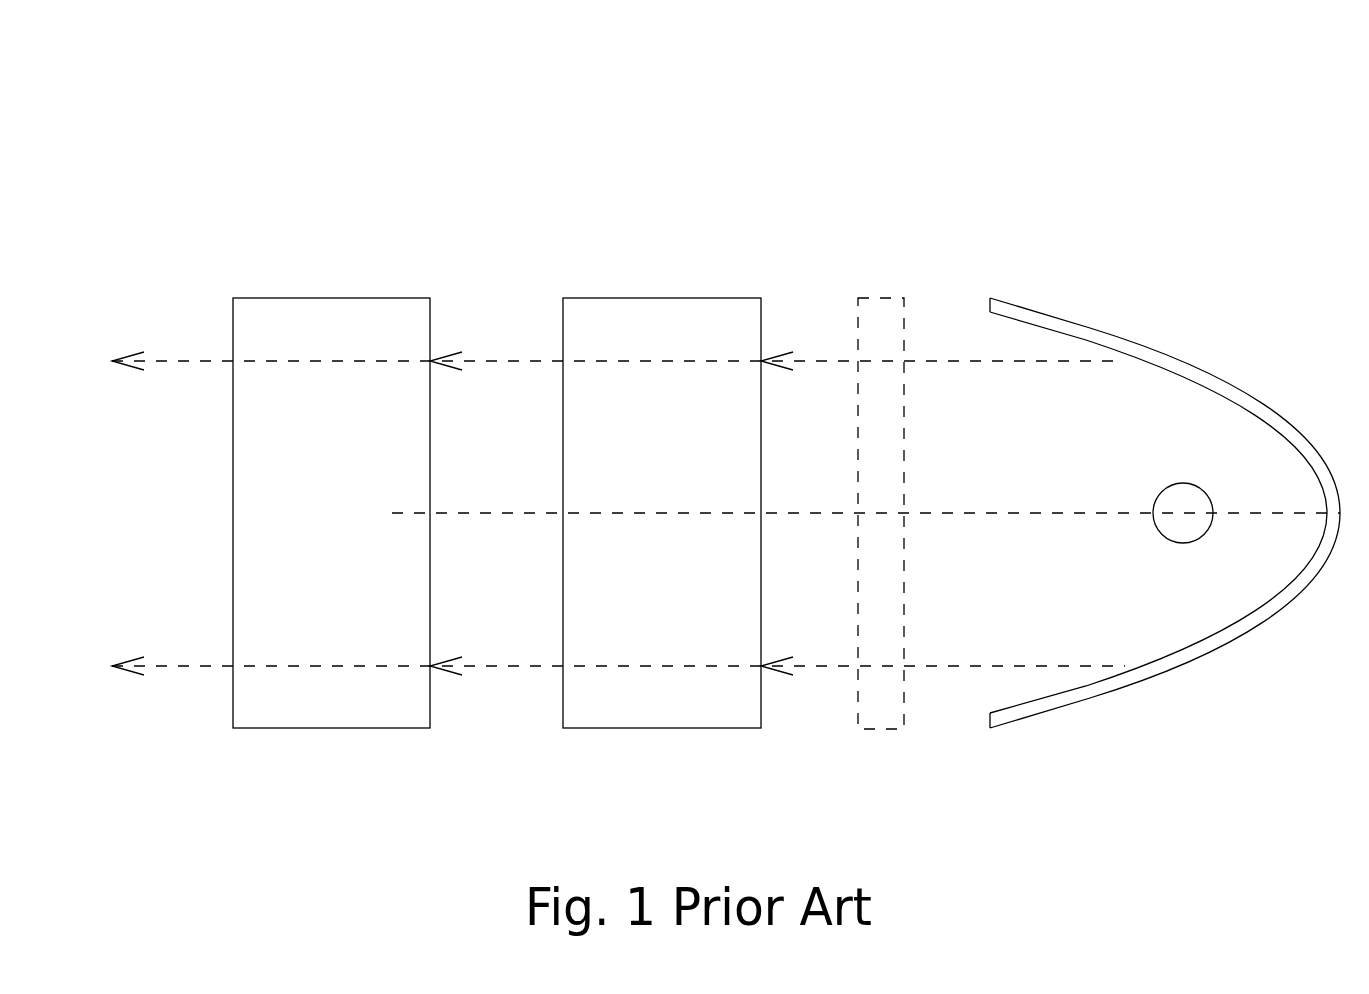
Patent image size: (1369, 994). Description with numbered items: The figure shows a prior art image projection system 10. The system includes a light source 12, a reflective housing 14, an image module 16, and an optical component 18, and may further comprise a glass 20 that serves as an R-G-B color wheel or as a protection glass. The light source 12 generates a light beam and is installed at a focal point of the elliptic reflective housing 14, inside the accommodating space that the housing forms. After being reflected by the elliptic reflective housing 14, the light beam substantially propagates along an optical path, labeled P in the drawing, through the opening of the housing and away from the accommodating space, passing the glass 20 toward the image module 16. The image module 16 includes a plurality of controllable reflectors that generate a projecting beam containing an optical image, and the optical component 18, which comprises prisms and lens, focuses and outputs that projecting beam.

The image projection system 10 is at (148, 148).
The light source 12 is at (1187, 542).
The reflective housing 14 is at (1237, 400).
The image module 16 is at (688, 500).
The optical component 18 is at (344, 500).
The glass 20 is at (897, 730).
The optical axis P is at (995, 515).